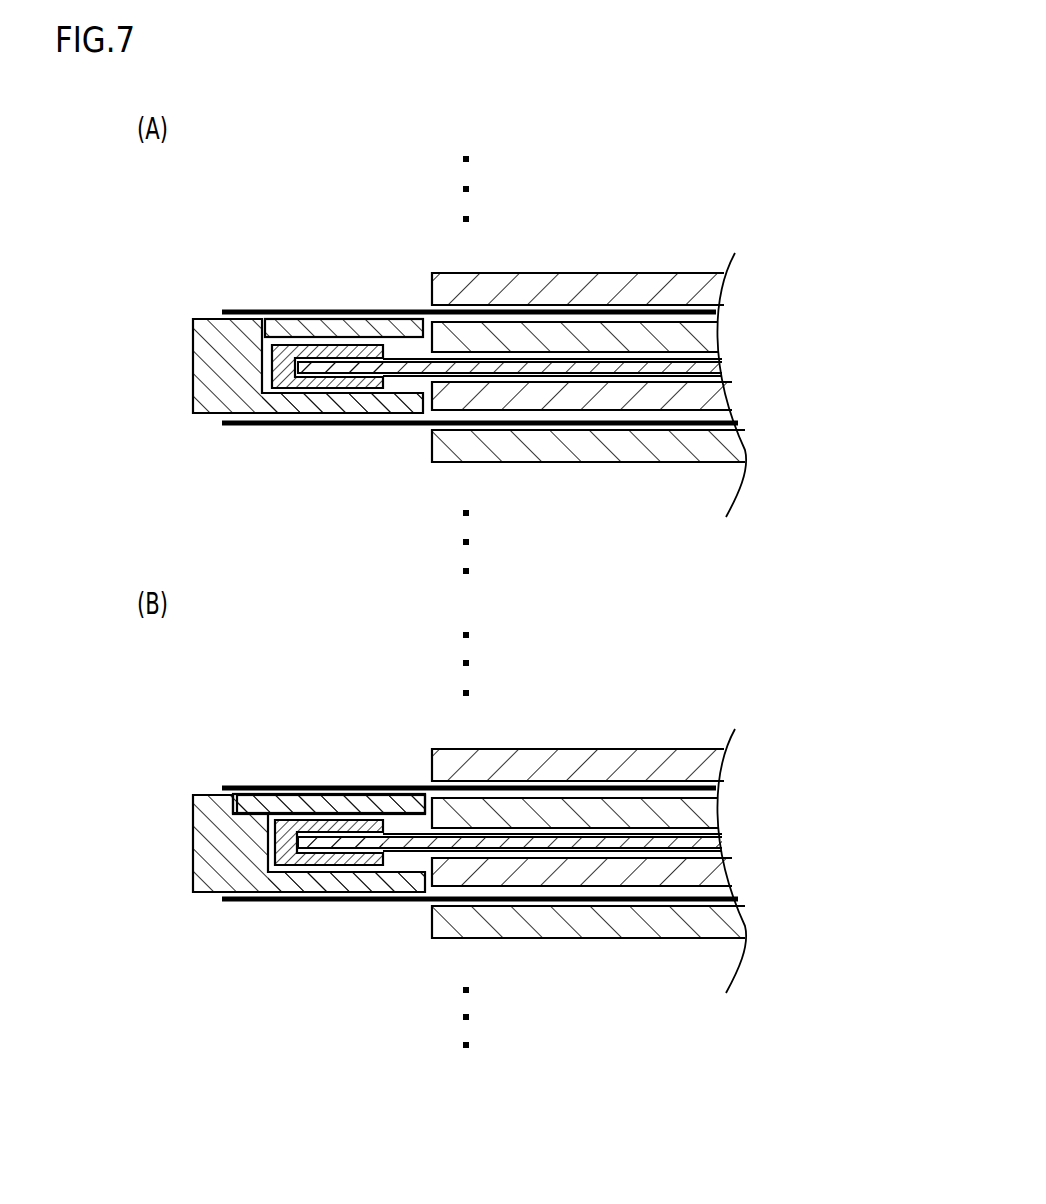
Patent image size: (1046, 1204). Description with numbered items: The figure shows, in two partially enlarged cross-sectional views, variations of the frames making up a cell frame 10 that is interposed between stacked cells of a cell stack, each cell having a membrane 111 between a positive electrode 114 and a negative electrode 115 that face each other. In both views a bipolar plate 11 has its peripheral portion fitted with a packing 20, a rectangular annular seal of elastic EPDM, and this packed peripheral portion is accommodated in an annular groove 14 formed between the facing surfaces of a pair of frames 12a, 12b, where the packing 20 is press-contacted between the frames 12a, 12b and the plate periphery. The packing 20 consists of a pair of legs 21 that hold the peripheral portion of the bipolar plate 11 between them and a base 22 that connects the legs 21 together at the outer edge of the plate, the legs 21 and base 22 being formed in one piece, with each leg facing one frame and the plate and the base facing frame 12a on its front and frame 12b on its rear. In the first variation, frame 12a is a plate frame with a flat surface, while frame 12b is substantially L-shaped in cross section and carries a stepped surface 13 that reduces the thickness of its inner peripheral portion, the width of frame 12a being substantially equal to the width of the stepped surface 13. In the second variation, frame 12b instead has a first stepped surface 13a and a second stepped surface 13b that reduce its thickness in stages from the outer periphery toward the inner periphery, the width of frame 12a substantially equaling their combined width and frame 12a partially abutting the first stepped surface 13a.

The cell frame 10 is at (193, 317).
The bipolar plate 11 is at (402, 365).
The frame 12a is at (283, 327).
The frame 12b is at (208, 406).
The stepped surface 13 is at (396, 398).
The first stepped surface 13a is at (250, 812).
The second stepped surface 13b is at (408, 890).
The annular groove 14 is at (323, 330).
The packing 20 is at (345, 480).
The legs 21 is at (357, 362).
The base 22 is at (280, 388).
The membrane 111 is at (715, 313).
The positive electrode 114 is at (715, 283).
The negative electrode 115 is at (705, 337).